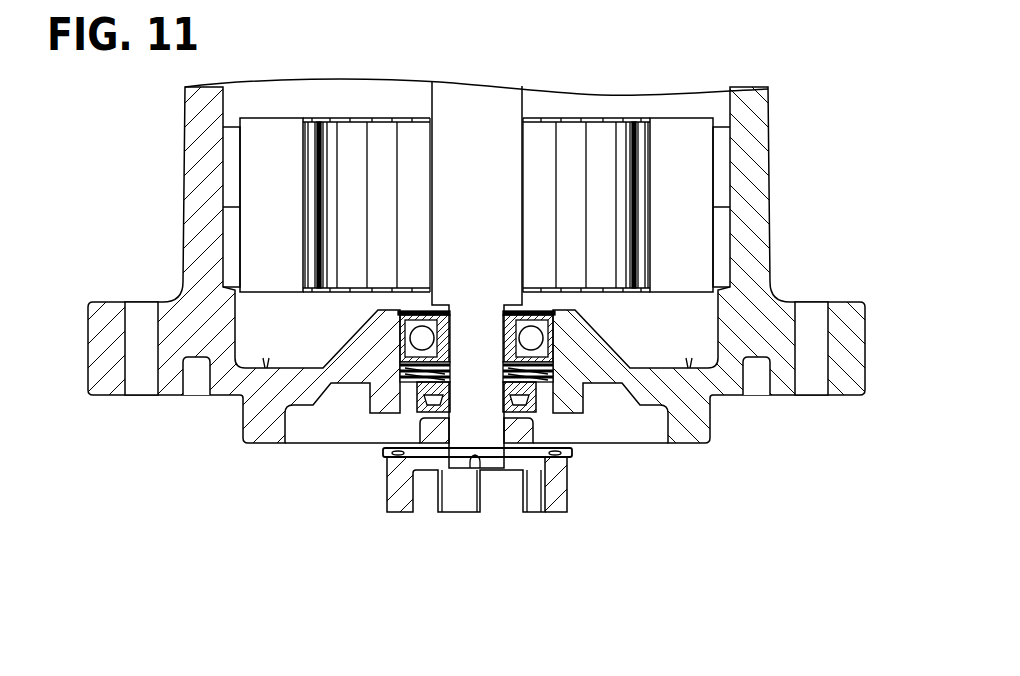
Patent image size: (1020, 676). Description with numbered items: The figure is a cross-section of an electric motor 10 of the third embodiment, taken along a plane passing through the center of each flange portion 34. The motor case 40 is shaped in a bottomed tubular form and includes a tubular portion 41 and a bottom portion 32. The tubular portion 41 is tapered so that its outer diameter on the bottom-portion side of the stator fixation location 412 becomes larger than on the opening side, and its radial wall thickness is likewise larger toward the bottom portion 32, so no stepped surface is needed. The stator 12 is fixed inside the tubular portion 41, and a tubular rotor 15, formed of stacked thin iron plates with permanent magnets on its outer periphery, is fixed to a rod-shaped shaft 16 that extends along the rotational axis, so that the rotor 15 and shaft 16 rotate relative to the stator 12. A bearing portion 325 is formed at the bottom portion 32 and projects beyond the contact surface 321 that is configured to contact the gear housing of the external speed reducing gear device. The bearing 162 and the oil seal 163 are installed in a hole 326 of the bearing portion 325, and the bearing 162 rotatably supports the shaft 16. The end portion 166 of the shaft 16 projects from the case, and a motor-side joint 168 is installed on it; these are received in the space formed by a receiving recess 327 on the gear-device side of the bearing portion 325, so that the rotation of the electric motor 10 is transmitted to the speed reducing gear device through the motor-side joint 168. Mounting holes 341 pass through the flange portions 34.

The electric motor 10 is at (248, 585).
The stator 12 is at (232, 158).
The rotor 15 is at (355, 180).
The shaft 16 is at (453, 237).
The bearing 162 is at (552, 335).
The oil seal 163 is at (540, 395).
The end portion 166 is at (495, 470).
The motor-side joint 168 is at (556, 497).
The bottom portion 32 is at (220, 390).
The contact surface 321 is at (103, 397).
The bearing portion 325 is at (350, 377).
The hole 326 is at (400, 338).
The receiving recess 327 is at (288, 427).
The flange portion 34 is at (102, 341).
The mounting hole 341 is at (133, 375).
The motor case 40 is at (787, 104).
The tubular portion 41 is at (757, 172).
The stator fixation location 412 is at (757, 136).